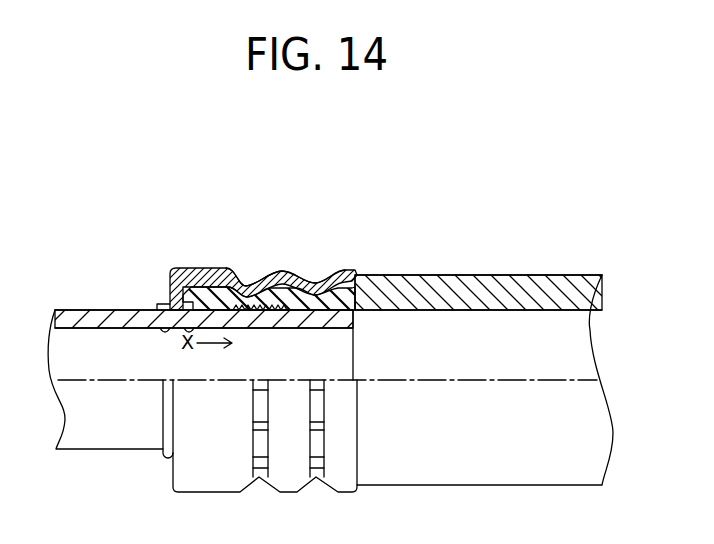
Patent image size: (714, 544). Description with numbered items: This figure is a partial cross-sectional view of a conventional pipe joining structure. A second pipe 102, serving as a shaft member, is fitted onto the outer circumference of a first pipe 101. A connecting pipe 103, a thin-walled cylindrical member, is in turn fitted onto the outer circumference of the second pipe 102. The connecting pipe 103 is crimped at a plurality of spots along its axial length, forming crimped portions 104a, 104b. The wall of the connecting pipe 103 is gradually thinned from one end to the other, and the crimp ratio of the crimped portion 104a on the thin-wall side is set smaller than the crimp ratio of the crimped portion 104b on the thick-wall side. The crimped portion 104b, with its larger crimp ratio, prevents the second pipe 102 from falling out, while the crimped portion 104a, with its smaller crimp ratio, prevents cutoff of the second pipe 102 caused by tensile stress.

The first pipe 101 is at (90, 309).
The second pipe 102 is at (480, 275).
The connecting pipe 103 is at (205, 268).
The crimped portion 104a is at (324, 280).
The crimped portion 104b is at (248, 282).